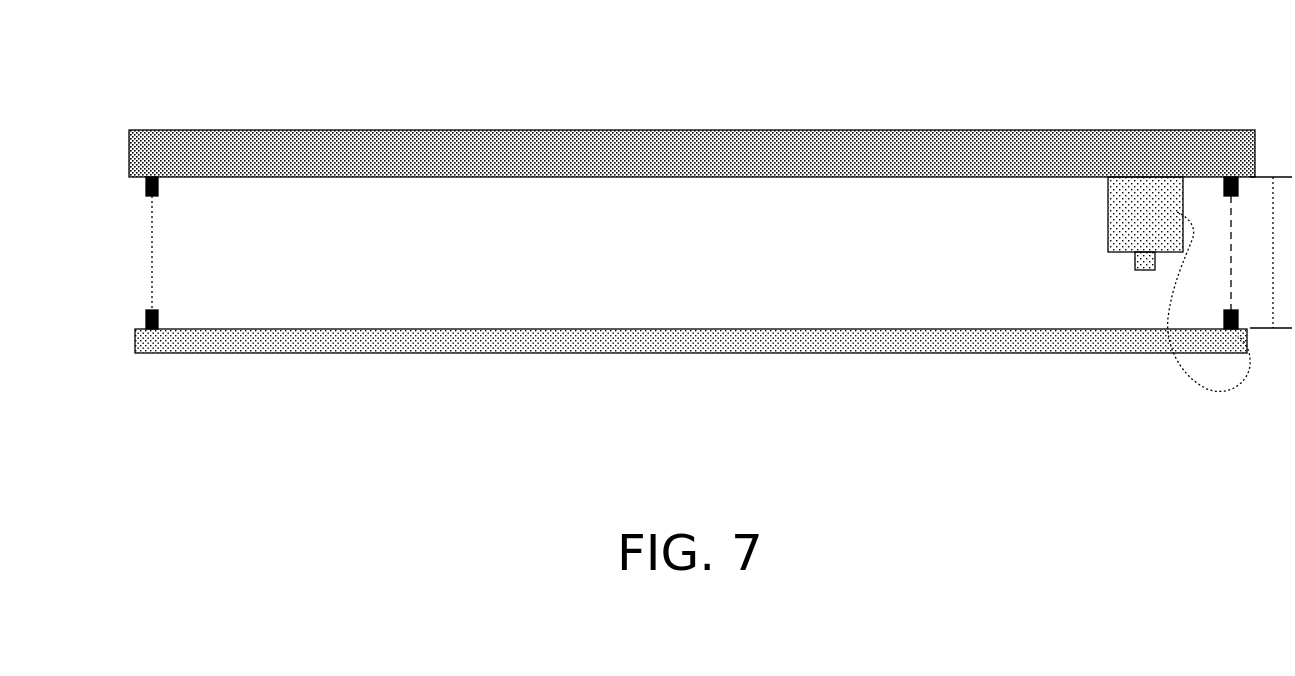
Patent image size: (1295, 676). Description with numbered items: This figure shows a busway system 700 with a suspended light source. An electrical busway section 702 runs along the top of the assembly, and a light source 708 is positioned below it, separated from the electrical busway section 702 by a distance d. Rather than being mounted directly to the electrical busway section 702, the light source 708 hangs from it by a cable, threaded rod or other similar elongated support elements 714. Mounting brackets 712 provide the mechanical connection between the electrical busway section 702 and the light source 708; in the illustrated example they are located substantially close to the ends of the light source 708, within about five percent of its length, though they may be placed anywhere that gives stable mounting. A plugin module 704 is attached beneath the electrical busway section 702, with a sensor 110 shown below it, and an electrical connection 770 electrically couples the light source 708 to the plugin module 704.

The busway system 700 is at (128, 77).
The electrical busway section 702 is at (362, 140).
The light source 708 is at (497, 350).
The mounting brackets 712 is at (145, 187).
The elongated support elements 714 is at (147, 251).
The plugin module 704 is at (1110, 229).
The sensor 110 is at (1136, 266).
The electrical connection 770 is at (1221, 394).